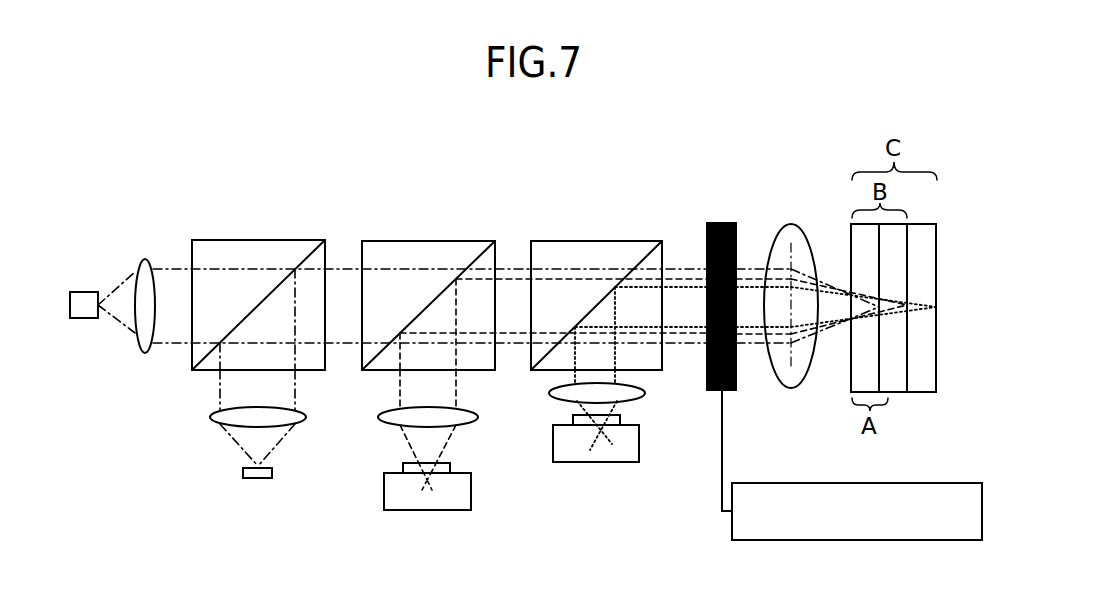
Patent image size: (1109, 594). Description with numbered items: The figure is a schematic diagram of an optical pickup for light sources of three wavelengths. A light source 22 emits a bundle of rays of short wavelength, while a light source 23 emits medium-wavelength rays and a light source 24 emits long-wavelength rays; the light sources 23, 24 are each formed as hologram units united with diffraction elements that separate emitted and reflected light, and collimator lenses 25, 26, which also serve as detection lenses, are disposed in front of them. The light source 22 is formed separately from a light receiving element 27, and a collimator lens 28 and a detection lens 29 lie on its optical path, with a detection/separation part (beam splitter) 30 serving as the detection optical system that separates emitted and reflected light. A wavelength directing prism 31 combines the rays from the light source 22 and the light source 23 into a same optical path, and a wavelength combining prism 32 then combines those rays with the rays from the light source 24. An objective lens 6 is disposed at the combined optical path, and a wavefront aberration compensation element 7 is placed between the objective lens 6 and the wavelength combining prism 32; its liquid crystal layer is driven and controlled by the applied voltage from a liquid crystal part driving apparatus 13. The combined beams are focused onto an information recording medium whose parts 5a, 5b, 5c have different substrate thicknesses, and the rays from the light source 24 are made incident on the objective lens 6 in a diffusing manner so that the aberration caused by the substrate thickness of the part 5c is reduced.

The light source 22 is at (80, 291).
The collimator lens 28 is at (143, 258).
The detection/separation part (beam splitter) 30 is at (258, 240).
The wavelength directing prism 31 is at (428, 241).
The wavelength combining prism 32 is at (597, 241).
The detection lens 29 is at (212, 416).
The collimator lens 25 is at (381, 418).
The collimator lens 26 is at (548, 394).
The light receiving element 27 is at (262, 479).
The light source 23 is at (427, 512).
The light source 24 is at (597, 462).
The wavefront aberration compensation element 7 is at (721, 223).
The objective lens 6 is at (790, 224).
The information recording medium part 5a is at (857, 375).
The information recording medium part 5b is at (893, 380).
The information recording medium part 5c is at (930, 378).
The liquid crystal part driving apparatus 13 is at (751, 483).